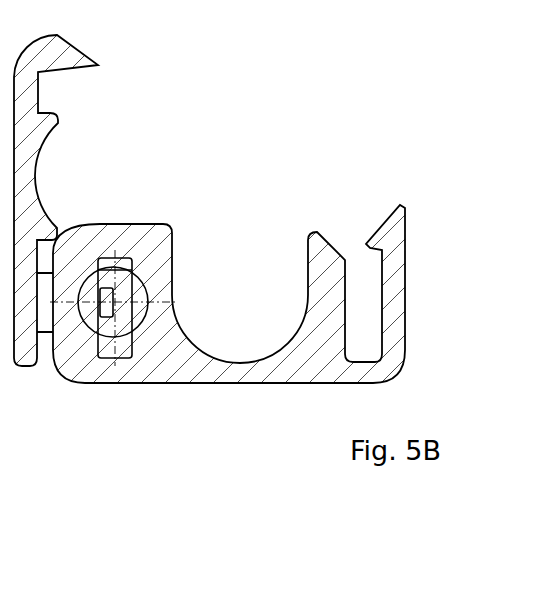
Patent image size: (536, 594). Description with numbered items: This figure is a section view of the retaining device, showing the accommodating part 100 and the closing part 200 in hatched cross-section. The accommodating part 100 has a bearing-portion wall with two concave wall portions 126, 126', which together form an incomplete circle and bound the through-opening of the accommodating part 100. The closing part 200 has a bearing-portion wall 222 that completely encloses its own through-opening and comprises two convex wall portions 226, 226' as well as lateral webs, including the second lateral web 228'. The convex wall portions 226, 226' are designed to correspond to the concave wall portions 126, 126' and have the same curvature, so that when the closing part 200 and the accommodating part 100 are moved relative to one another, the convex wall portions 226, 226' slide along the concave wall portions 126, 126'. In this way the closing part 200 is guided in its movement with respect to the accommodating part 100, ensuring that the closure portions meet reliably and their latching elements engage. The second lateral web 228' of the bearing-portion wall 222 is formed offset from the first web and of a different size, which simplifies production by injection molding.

The accommodating part 100 is at (235, 391).
The closing part 200 is at (62, 124).
The second lateral web 228' is at (59, 393).
The bearing-portion wall 222 is at (120, 305).
The convex wall portion 226 is at (175, 248).
The convex wall portion 226' is at (176, 264).
The concave wall portion 126 is at (130, 386).
The concave wall portion 126' is at (125, 387).